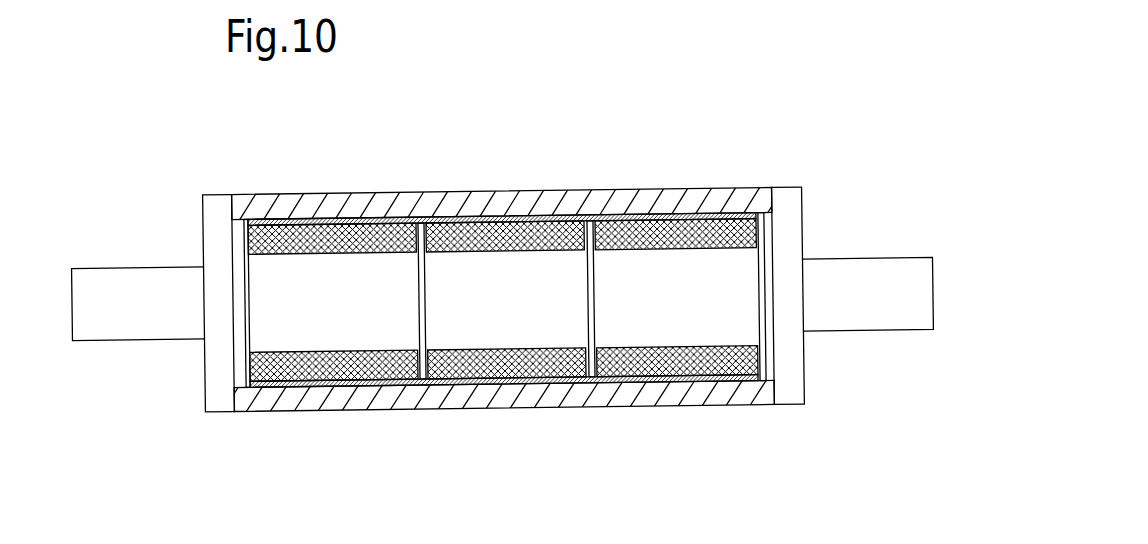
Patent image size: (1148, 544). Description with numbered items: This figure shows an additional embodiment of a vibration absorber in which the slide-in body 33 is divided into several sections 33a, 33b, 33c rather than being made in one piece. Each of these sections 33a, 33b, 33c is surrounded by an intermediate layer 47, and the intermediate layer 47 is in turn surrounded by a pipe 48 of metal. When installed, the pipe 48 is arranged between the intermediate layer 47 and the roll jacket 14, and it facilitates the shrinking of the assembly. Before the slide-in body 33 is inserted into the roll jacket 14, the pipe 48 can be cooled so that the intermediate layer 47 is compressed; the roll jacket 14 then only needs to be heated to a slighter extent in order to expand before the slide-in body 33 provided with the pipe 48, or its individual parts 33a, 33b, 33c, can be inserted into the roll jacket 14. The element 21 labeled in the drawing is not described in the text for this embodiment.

The roll jacket 14 is at (661, 194).
The end plate 21 is at (762, 268).
The slide-in body 33 is at (503, 308).
The section of slide-in body 33a is at (372, 338).
The section of slide-in body 33b is at (512, 337).
The section of slide-in body 33c is at (680, 334).
The intermediate layer 47 is at (294, 380).
The pipe 48 is at (321, 218).